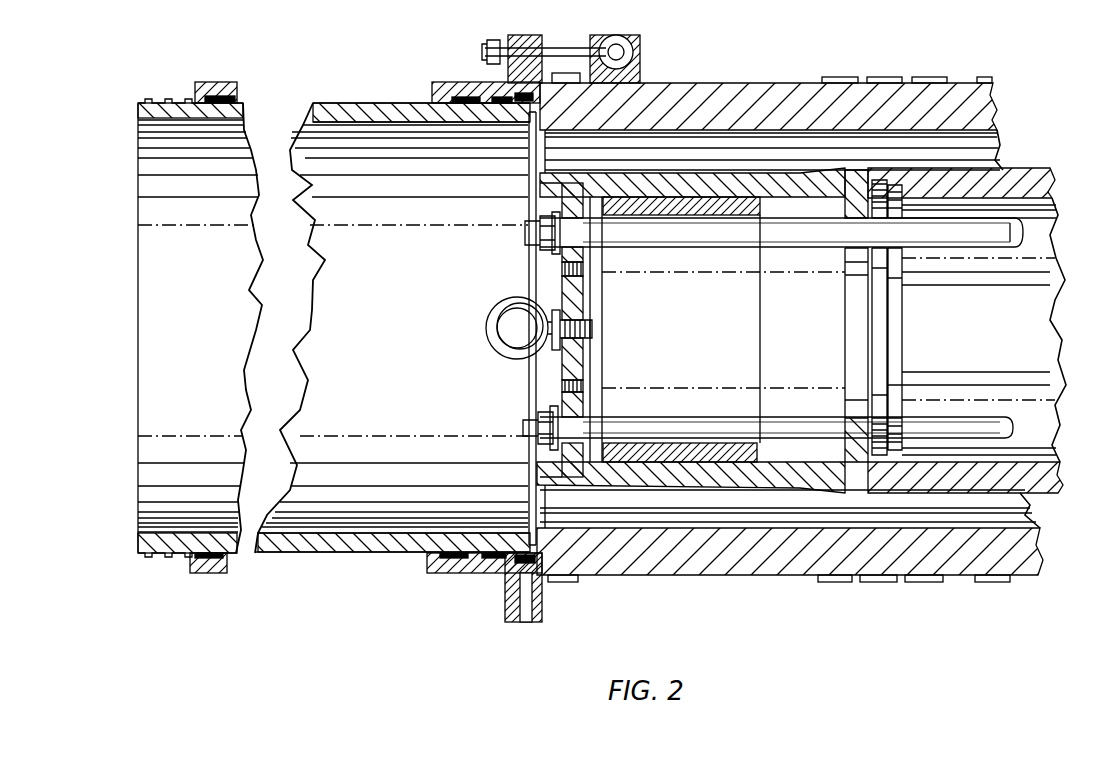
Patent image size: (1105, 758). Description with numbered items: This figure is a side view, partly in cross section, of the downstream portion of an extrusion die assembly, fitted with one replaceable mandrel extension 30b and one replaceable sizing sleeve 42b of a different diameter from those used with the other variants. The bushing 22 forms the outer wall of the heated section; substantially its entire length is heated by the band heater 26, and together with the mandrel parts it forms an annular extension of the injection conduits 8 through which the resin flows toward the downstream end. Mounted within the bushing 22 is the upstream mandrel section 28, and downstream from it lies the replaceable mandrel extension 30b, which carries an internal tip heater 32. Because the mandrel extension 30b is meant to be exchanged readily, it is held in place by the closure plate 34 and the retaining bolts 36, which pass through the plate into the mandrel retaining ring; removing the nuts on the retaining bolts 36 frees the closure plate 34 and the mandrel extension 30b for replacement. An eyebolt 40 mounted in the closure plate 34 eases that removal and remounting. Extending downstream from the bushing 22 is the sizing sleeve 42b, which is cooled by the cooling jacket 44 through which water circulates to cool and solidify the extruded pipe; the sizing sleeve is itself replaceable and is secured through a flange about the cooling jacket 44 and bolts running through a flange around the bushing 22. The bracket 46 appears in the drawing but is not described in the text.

The injection conduits 8 is at (688, 148).
The bushing 22 is at (985, 108).
The band heater 26 is at (840, 77).
The upstream mandrel section 28 is at (1025, 175).
The mandrel extension 30b is at (724, 182).
The internal tip heater 32 is at (762, 333).
The closure plate 34 is at (560, 368).
The retaining bolts 36 is at (710, 240).
The eyebolt 40 is at (486, 330).
The sizing sleeve 42b is at (243, 105).
The cooling jacket 44 is at (458, 82).
The bracket 46 is at (543, 48).